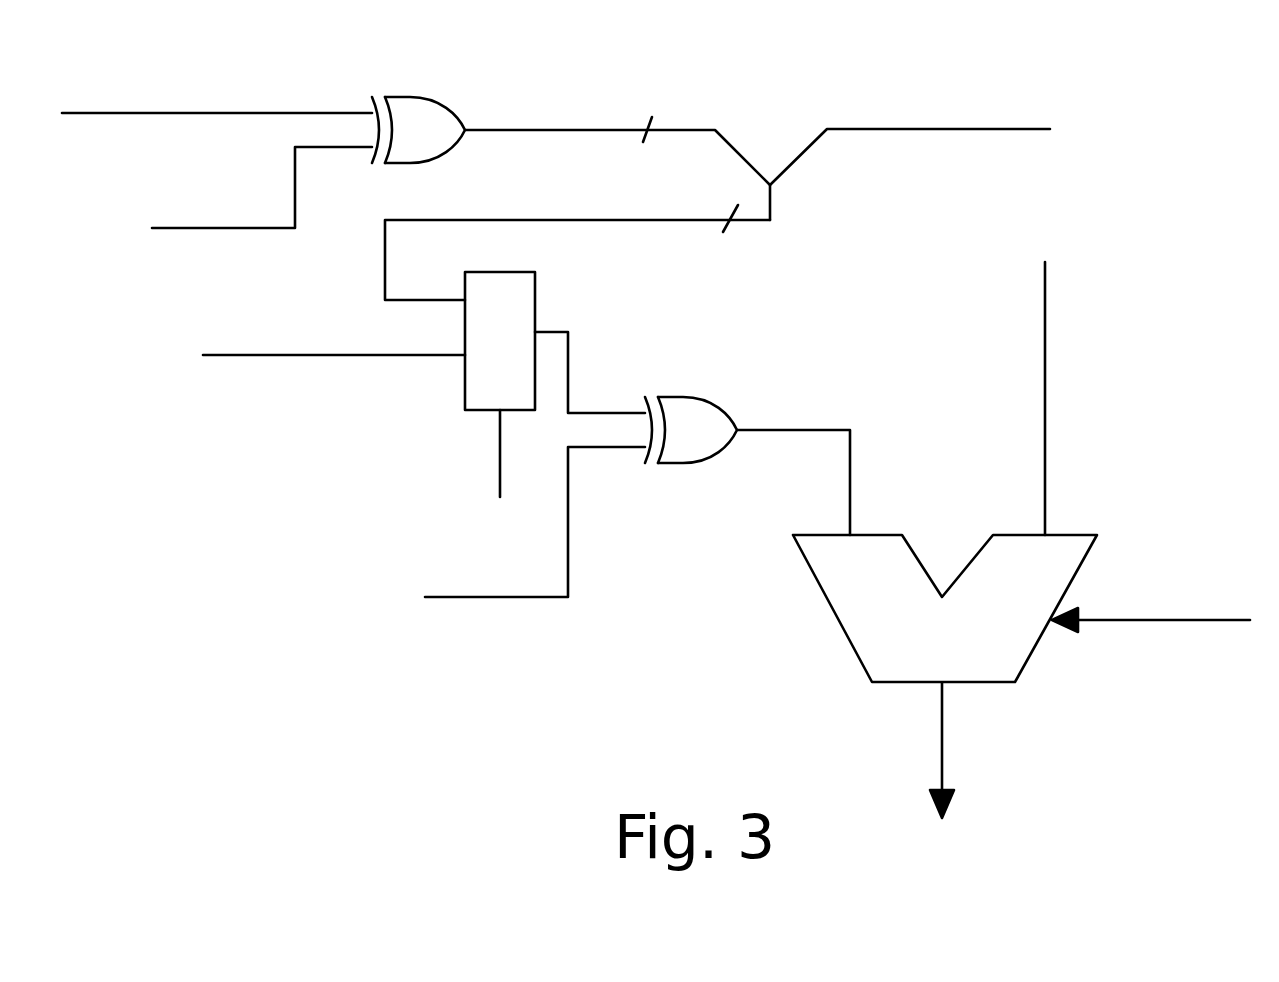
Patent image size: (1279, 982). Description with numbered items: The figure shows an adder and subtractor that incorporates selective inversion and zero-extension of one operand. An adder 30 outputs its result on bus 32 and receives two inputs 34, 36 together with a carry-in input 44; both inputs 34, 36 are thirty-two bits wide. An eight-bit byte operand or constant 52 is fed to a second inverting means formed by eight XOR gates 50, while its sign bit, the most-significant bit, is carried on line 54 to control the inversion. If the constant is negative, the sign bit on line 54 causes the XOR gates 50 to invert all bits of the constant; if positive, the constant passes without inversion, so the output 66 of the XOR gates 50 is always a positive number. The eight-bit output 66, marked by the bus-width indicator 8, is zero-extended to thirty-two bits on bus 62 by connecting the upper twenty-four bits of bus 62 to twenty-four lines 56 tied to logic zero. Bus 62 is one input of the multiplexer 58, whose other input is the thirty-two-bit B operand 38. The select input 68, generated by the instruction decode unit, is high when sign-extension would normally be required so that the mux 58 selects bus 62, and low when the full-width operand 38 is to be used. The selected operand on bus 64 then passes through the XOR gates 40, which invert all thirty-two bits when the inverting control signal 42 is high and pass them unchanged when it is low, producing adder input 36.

The 8-bit bus 8 is at (652, 108).
The adder 30 is at (839, 620).
The bus 32 is at (1065, 785).
The input 34 is at (1045, 407).
The input 36 is at (850, 473).
The B operand 38 is at (237, 357).
The exclusive-OR gates 40 is at (718, 405).
The inverting control signal 42 is at (505, 598).
The carry-in input 44 is at (1205, 621).
The XOR gates 50 is at (447, 108).
The byte operand or constant B 7:0 52 is at (340, 113).
The line 54 is at (185, 229).
The lines tied to logic zero 56 is at (885, 130).
The multiplexer 58 is at (465, 373).
The bus 62 is at (660, 220).
The bus 64 is at (572, 372).
The output 66 is at (575, 130).
The select input 68 is at (500, 465).